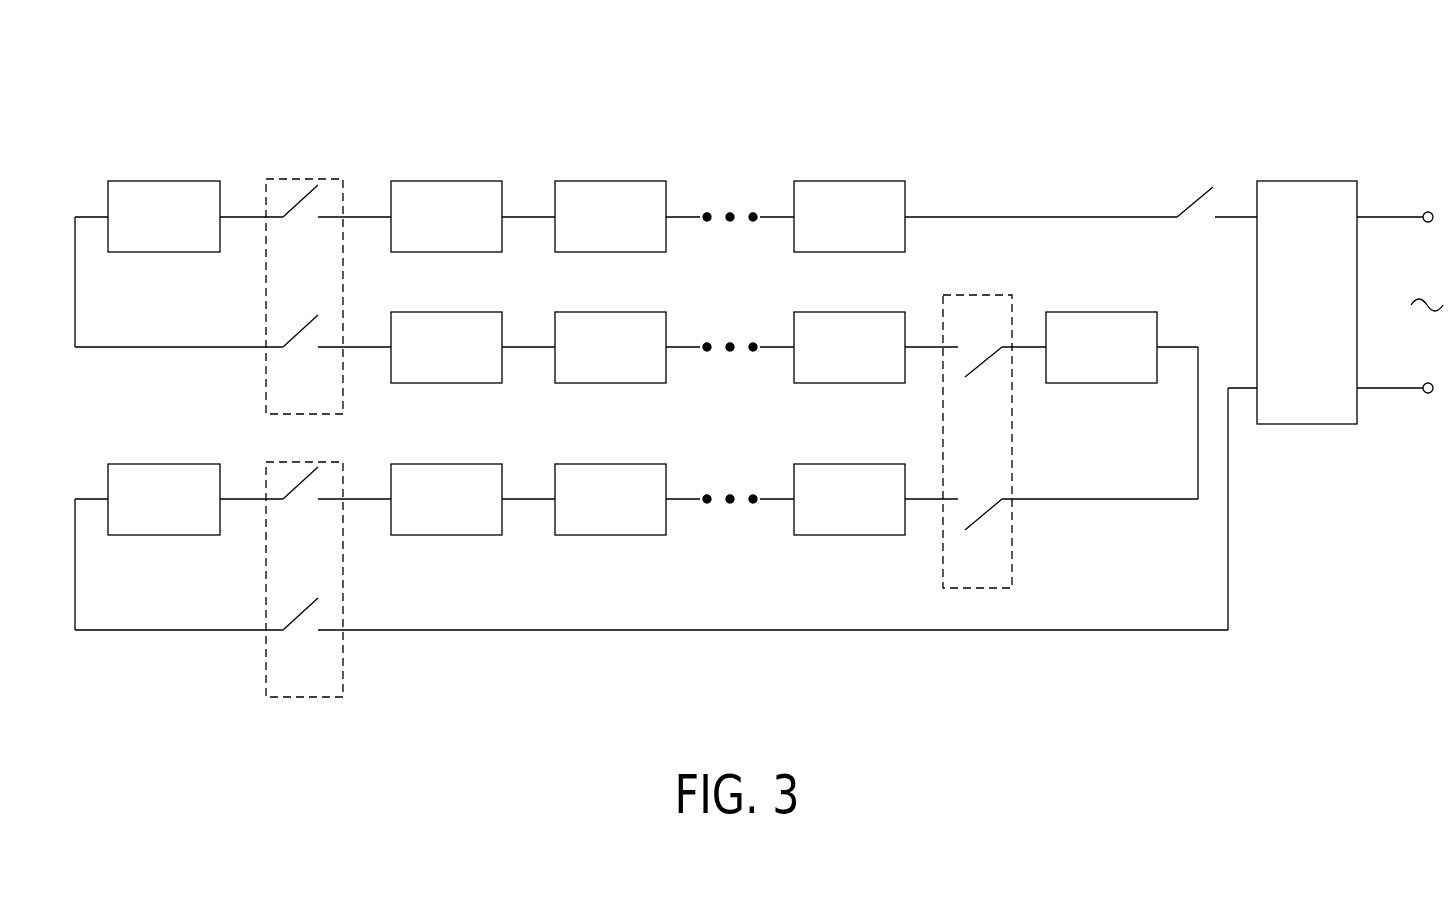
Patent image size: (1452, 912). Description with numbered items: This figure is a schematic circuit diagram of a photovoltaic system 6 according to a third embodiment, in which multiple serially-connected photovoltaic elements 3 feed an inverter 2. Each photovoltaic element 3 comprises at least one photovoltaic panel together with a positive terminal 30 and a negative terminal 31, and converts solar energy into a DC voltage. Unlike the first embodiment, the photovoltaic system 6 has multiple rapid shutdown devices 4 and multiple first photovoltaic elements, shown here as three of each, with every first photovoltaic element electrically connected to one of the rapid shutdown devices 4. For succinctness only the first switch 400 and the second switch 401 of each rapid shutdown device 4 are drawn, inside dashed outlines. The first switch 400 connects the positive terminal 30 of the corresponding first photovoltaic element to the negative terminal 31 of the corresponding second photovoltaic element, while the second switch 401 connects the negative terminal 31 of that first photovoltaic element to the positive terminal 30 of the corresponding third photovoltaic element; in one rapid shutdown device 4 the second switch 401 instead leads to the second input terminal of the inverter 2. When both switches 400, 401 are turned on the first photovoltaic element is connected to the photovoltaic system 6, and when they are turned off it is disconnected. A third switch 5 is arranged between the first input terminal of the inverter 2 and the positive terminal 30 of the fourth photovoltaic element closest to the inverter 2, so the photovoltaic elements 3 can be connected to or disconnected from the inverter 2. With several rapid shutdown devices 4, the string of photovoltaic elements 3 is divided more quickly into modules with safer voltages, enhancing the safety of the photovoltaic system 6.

The inverter 2 is at (1300, 181).
The photovoltaic element 3 is at (165, 181).
The rapid shutdown device 4 is at (304, 178).
The third switch 5 is at (1237, 190).
The photovoltaic system 6 is at (1389, 58).
The positive terminal 30 is at (222, 216).
The negative terminal 31 is at (107, 216).
The first switch 400 is at (306, 225).
The second switch 401 is at (306, 355).